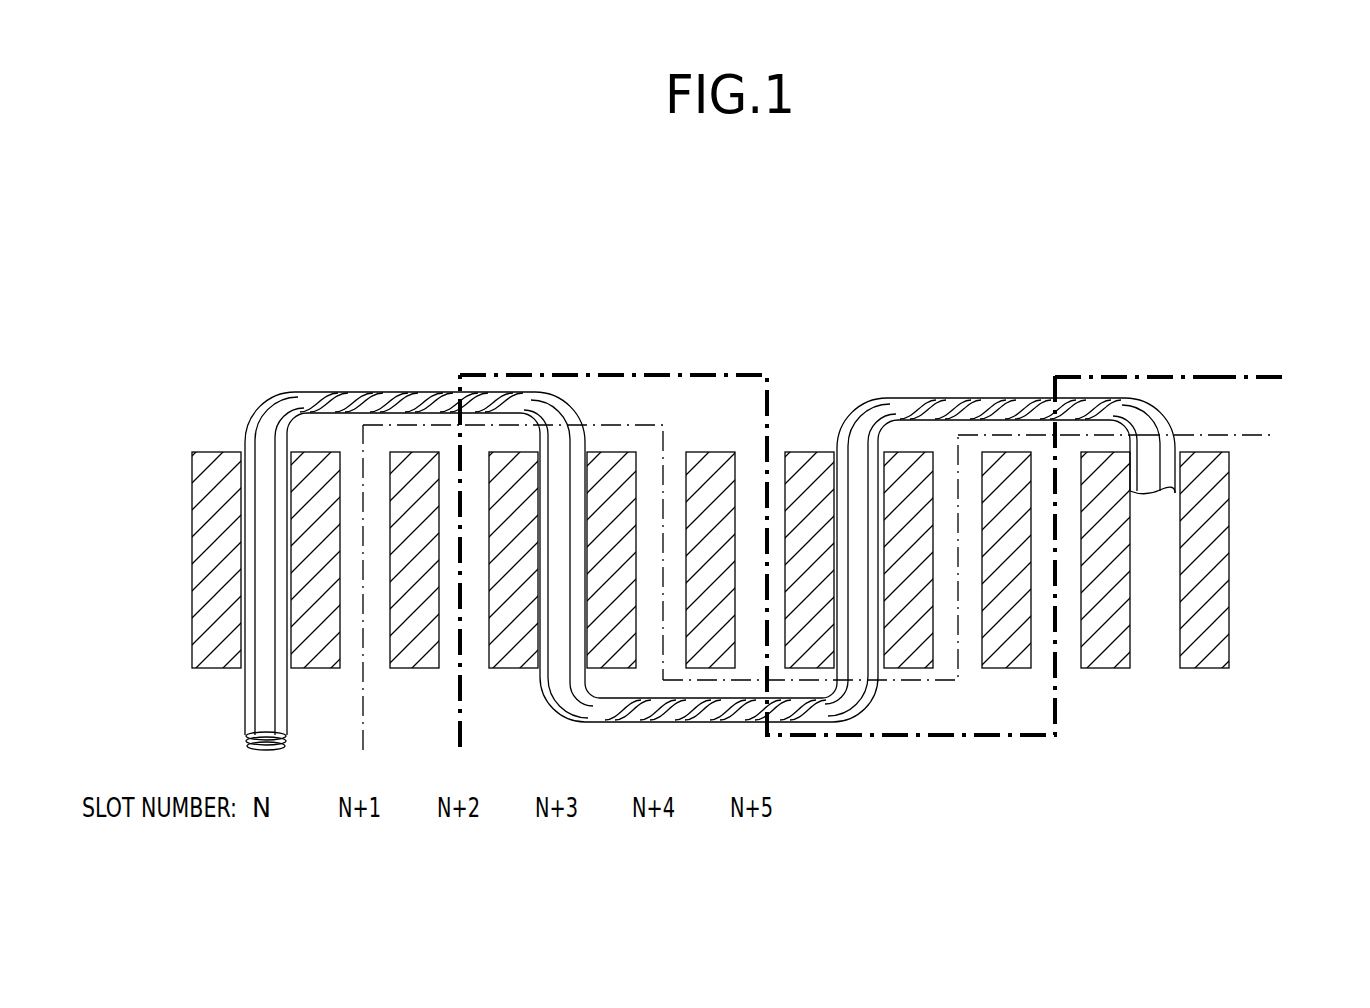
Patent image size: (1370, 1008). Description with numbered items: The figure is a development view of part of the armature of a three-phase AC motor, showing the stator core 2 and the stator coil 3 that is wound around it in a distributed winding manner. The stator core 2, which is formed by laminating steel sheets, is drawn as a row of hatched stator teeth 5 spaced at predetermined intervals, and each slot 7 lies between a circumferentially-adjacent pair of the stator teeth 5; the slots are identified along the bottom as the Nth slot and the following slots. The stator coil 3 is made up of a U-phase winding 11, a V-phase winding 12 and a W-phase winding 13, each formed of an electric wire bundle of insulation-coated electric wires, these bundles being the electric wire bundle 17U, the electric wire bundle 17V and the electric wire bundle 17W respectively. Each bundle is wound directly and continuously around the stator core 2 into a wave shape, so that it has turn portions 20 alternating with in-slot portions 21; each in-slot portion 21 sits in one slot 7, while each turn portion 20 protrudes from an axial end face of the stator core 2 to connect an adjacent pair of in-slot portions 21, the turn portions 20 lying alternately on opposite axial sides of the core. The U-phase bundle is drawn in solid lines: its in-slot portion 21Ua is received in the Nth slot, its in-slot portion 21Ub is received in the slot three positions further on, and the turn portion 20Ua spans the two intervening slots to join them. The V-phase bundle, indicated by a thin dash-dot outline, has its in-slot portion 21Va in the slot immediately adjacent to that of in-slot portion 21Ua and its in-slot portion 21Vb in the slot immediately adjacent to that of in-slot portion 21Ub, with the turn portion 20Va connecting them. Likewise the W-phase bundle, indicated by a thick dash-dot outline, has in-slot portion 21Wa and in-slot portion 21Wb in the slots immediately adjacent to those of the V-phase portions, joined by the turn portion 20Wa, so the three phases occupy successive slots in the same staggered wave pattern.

The stator core 2 is at (1235, 570).
The stator coil 3 is at (1243, 345).
The stator teeth 5 is at (1212, 660).
The slots 7 is at (1157, 657).
The U-phase winding 11 is at (943, 397).
The V-phase winding 12 is at (1010, 433).
The W-phase winding 13 is at (1165, 377).
The electric wire bundle 17U is at (1092, 405).
The electric wire bundle 17V is at (1250, 433).
The electric wire bundle 17W is at (1258, 377).
The turn portions 20 is at (325, 398).
The turn portion 20Ua is at (362, 400).
The turn portion 20Va is at (437, 398).
The turn portion 20Wa is at (550, 375).
The in-slot portions 21 is at (262, 545).
The in-slot portion 21Ua is at (262, 655).
The in-slot portion 21Va is at (360, 665).
The in-slot portion 21Wa is at (457, 665).
The in-slot portion 21Ub is at (557, 625).
The in-slot portion 21Vb is at (642, 718).
The in-slot portion 21Wb is at (768, 537).